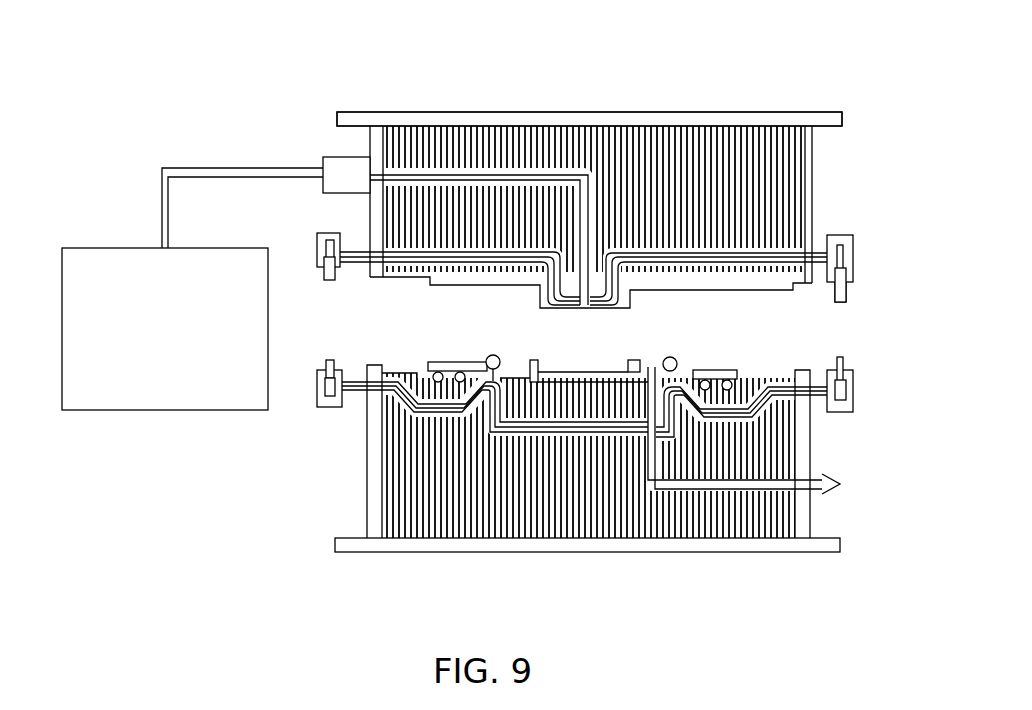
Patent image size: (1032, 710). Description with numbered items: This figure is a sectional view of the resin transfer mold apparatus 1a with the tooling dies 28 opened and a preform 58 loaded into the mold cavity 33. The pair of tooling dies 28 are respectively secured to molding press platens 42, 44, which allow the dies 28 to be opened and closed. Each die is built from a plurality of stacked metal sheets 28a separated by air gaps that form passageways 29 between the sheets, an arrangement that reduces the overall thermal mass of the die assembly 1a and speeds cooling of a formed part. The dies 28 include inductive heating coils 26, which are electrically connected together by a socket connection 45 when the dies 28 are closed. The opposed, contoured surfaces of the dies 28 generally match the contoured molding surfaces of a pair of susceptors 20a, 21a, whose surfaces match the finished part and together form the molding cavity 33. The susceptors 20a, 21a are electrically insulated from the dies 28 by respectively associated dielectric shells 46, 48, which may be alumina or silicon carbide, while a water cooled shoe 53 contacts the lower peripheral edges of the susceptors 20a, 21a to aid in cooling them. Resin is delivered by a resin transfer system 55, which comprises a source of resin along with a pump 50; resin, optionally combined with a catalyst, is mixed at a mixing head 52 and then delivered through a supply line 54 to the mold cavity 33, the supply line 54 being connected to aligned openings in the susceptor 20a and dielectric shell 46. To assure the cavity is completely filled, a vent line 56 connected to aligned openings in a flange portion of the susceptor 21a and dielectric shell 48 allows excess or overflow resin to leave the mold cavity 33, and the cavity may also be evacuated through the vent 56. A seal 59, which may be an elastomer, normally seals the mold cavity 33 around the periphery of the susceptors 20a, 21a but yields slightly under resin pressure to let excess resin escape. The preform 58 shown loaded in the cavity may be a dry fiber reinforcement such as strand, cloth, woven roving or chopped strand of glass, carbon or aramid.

The resin transfer mold apparatus 1a is at (364, 98).
The tooling dies 28 is at (428, 140).
The stacked metal sheets 28a is at (620, 166).
The supply line 54 is at (590, 222).
The dielectric shell 46 is at (690, 280).
The molding press platen 42 is at (815, 122).
The coils 26 is at (818, 222).
The socket connection 45 is at (316, 246).
The resin transfer system 55 is at (135, 143).
The mixing head 52 is at (322, 163).
The pump 50 is at (160, 415).
The dielectric shell 48 is at (475, 382).
The water cooled shoe 53 is at (449, 372).
The preform 58 is at (584, 380).
The mold cavity 33 is at (605, 368).
The susceptor 20a is at (732, 292).
The seal 59 is at (490, 388).
The molding press platen 44 is at (437, 545).
The susceptor 21a is at (557, 395).
The passageways 29 is at (676, 495).
The vent line 56 is at (762, 484).